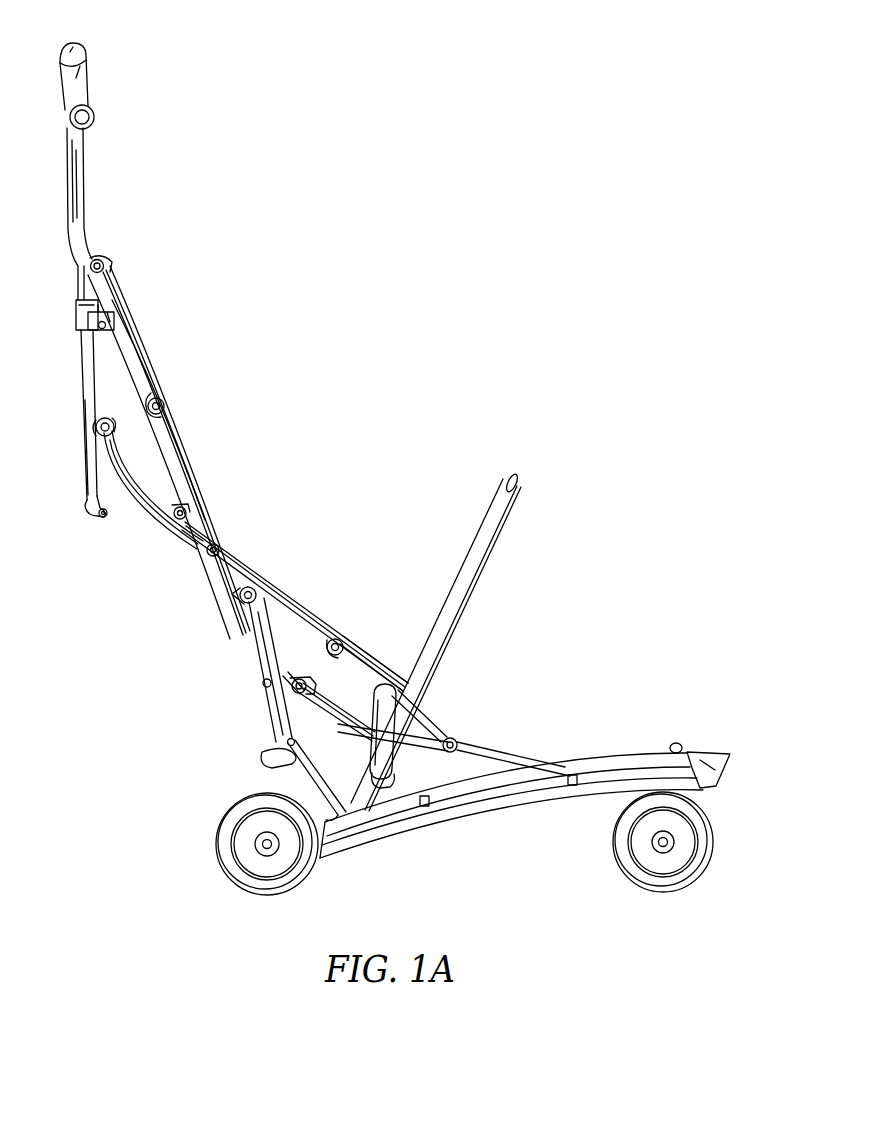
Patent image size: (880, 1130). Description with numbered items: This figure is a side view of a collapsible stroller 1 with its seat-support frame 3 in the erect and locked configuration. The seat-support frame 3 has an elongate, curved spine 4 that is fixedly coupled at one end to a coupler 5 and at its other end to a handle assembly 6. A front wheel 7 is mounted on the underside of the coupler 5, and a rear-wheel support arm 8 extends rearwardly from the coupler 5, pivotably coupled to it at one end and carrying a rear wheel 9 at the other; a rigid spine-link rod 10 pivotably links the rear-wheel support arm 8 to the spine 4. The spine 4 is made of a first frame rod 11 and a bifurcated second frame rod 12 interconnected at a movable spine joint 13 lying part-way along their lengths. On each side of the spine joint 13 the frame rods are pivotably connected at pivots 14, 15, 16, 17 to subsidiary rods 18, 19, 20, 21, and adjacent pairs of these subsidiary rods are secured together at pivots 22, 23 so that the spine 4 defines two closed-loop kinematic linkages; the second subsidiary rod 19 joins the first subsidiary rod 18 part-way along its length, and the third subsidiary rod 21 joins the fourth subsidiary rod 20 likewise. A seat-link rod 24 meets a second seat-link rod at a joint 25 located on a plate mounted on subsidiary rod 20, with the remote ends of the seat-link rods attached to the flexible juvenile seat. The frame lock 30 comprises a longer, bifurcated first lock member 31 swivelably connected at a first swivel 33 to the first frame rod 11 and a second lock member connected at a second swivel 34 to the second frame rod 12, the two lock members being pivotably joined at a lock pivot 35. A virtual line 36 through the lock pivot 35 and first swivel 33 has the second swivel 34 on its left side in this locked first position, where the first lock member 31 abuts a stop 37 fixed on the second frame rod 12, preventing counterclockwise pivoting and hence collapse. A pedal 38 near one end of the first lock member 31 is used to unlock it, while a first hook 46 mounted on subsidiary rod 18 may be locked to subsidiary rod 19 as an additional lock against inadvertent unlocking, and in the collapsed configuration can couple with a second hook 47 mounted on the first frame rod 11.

The collapsible stroller 1 is at (218, 128).
The seat-support frame 3 is at (430, 462).
The elongate spine 4 is at (240, 480).
The coupler 5 is at (717, 756).
The handle assembly 6 is at (90, 64).
The front wheel 7 is at (715, 852).
The rear-wheel support arm 8 is at (527, 797).
The rear wheel 9 is at (225, 872).
The spine-link rod 10 is at (338, 806).
The first frame rod 11 is at (142, 515).
The second frame rod 12 is at (190, 452).
The spine joint 13 is at (230, 545).
The pivot 14 is at (96, 425).
The pivot 15 is at (165, 405).
The pivot 16 is at (307, 683).
The pivot 17 is at (340, 640).
The first subsidiary rod 18 is at (72, 170).
The second subsidiary rod 19 is at (160, 355).
The fourth subsidiary rod 20 is at (352, 730).
The third subsidiary rod 21 is at (375, 660).
The pivot 22 is at (102, 260).
The pivot 23 is at (460, 745).
The seat-link rod 24 is at (485, 572).
The joint 25 is at (383, 788).
The frame lock 30 is at (215, 690).
The first lock member 31 is at (258, 665).
The first swivel 33 is at (258, 590).
The second swivel 34 is at (262, 682).
The lock pivot 35 is at (277, 740).
The virtual line 36 is at (240, 553).
The stop 37 is at (290, 676).
The pedal 38 is at (262, 763).
The first hook 46 is at (110, 322).
The second hook 47 is at (178, 506).